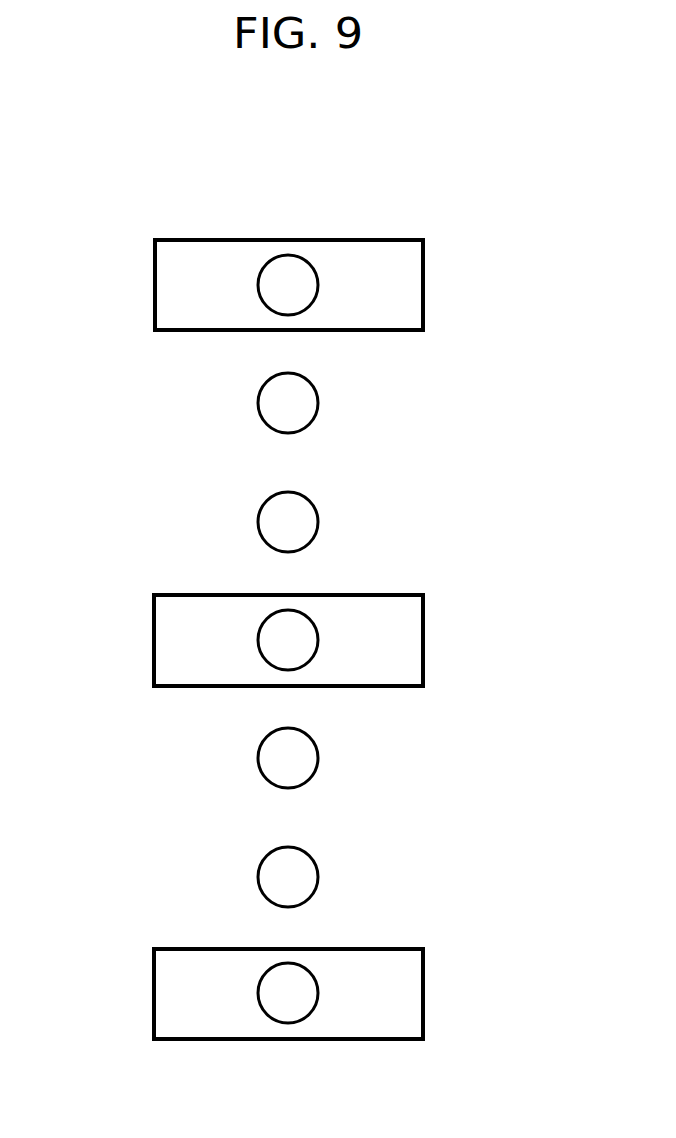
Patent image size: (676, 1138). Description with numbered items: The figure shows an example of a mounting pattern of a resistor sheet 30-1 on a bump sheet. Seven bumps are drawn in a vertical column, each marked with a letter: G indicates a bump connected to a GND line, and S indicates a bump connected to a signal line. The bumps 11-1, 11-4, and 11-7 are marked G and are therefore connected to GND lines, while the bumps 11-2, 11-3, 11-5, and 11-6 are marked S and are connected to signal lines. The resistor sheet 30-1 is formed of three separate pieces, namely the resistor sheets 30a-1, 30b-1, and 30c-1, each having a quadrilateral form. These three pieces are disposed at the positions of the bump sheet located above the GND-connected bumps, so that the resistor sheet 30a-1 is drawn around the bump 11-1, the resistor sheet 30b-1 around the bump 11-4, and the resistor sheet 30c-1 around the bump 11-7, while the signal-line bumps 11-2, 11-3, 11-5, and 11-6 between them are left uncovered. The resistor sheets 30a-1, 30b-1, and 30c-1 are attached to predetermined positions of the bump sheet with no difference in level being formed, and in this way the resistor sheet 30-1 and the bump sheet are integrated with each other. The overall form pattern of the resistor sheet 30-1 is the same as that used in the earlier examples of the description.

The resistor sheet 30-1 is at (388, 197).
The resistor sheet 30a-1 is at (423, 283).
The resistor sheet 30b-1 is at (423, 638).
The resistor sheet 30c-1 is at (423, 992).
The bump 11-1 is at (258, 288).
The bump 11-2 is at (258, 407).
The bump 11-3 is at (258, 525).
The bump 11-4 is at (258, 643).
The bump 11-5 is at (258, 762).
The bump 11-6 is at (258, 880).
The bump 11-7 is at (258, 998).